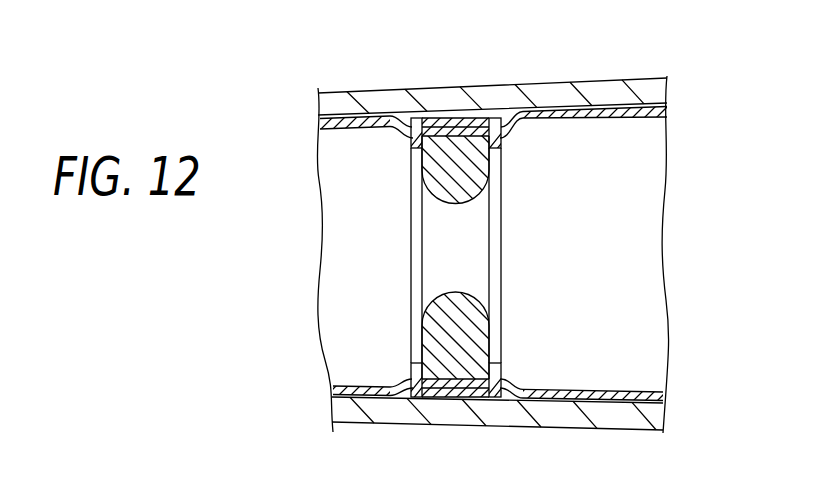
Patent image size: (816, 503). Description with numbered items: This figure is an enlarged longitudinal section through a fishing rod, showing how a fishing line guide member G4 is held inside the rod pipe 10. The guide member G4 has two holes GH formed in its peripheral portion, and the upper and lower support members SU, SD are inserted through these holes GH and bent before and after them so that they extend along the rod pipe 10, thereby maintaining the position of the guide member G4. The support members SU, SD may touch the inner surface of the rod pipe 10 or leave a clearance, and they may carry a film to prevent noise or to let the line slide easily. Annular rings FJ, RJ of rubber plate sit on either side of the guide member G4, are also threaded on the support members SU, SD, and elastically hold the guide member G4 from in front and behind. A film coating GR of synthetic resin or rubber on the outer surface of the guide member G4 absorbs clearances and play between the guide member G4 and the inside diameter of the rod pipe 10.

The rod pipe 10 is at (345, 103).
The annular ring FJ is at (400, 128).
The film coating GR is at (445, 117).
The hole GH is at (475, 127).
The annular ring RJ is at (514, 86).
The upper support member SU is at (510, 90).
The lower support member SD is at (574, 400).
The fishing line guide member G4 is at (473, 347).